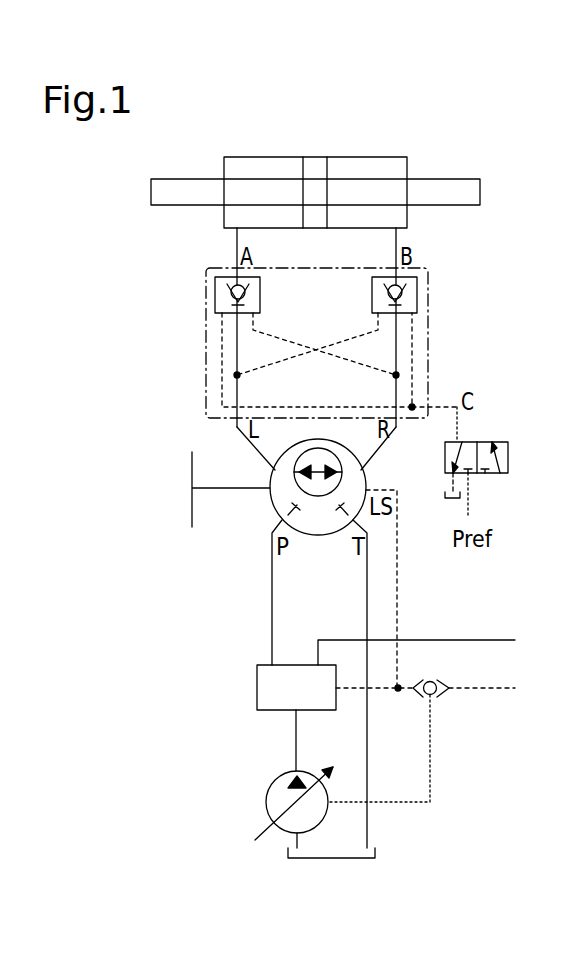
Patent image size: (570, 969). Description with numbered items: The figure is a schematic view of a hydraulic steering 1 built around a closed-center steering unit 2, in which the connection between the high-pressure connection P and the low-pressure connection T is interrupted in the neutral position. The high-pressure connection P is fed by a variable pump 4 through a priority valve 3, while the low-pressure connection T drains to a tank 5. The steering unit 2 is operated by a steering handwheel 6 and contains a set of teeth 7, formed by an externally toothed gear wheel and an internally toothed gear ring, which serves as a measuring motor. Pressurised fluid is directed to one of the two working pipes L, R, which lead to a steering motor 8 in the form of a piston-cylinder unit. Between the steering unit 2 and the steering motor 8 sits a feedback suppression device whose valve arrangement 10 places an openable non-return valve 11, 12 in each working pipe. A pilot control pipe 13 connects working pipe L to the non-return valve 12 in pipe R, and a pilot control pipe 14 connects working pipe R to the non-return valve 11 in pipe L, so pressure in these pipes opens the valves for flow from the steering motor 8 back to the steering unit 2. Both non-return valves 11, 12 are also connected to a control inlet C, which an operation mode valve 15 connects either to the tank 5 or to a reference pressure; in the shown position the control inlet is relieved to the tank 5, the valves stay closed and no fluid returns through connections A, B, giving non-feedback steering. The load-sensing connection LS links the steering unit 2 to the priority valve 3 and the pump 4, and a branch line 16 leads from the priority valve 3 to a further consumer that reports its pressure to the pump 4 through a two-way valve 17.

The steering 1 is at (480, 135).
The steering unit 2 is at (272, 508).
The priority valve 3 is at (263, 683).
The pump 4 is at (265, 797).
The tank 5 is at (362, 858).
The steering handwheel 6 is at (192, 468).
The set of teeth 7 is at (340, 487).
The steering motor 8 is at (373, 152).
The valve arrangement 10 is at (428, 347).
The non-return valve 11 is at (215, 298).
The non-return valve 12 is at (417, 285).
The pilot control pipe 13 is at (282, 363).
The pilot control pipe 14 is at (354, 363).
The operation mode valve 15 is at (508, 458).
The branch line 16 is at (468, 640).
The two-way valve 17 is at (443, 700).